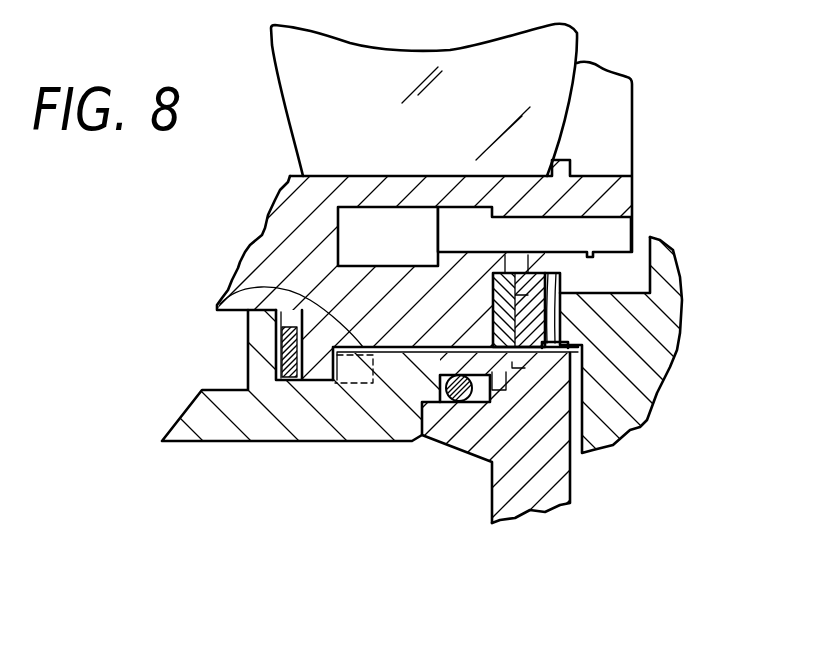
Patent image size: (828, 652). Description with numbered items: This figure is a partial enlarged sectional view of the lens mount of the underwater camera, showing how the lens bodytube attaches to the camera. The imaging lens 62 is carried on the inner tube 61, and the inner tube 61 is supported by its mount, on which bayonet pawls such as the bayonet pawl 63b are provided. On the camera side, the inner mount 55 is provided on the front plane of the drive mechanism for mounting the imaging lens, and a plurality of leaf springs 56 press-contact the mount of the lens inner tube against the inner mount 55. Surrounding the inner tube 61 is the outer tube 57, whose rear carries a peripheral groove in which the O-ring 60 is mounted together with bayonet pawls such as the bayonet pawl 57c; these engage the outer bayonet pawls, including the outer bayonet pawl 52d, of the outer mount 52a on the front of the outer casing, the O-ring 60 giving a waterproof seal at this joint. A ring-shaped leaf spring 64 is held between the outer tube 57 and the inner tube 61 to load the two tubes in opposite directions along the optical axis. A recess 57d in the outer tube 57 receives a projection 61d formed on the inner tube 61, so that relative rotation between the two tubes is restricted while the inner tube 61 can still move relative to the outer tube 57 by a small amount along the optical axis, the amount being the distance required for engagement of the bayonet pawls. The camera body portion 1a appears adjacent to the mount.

The imaging lens 62 is at (285, 60).
The inner tube 61 is at (292, 192).
The projection 61d is at (247, 287).
The camera body 1a is at (580, 195).
The inner mount 55 is at (547, 254).
The bayonet pawl 63b is at (527, 274).
The leaf spring 56 is at (566, 325).
The outer tube 57 is at (203, 410).
The bayonet pawl 57c is at (513, 364).
The recess 57d is at (360, 390).
The ring-shaped leaf spring 64 is at (280, 344).
The O-ring 60 is at (458, 405).
The outer mount 52a is at (467, 435).
The outer bayonet pawl 52d is at (495, 402).